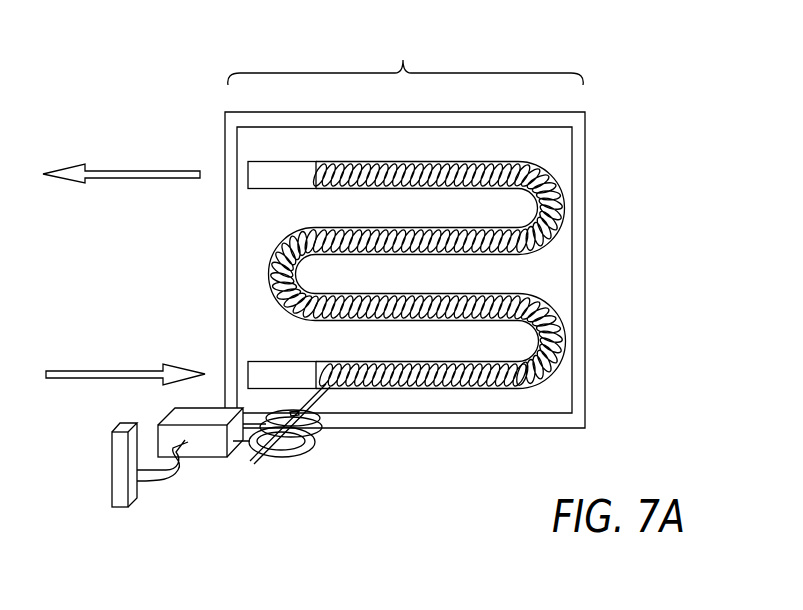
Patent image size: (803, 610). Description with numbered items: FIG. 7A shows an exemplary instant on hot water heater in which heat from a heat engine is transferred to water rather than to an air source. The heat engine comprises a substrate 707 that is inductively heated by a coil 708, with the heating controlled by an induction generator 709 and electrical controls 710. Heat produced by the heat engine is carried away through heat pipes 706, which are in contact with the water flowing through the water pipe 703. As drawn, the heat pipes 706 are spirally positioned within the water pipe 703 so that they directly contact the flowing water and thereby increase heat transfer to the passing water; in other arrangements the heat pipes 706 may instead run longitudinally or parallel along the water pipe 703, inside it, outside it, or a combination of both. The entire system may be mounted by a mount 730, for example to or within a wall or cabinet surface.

The mount 730 is at (406, 56).
The water pipe 703 is at (400, 398).
The heat pipe 706 is at (278, 291).
The substrate 707 is at (275, 440).
The coil 708 is at (305, 436).
The induction generator 709 is at (178, 418).
The electrical controls 710 is at (120, 455).